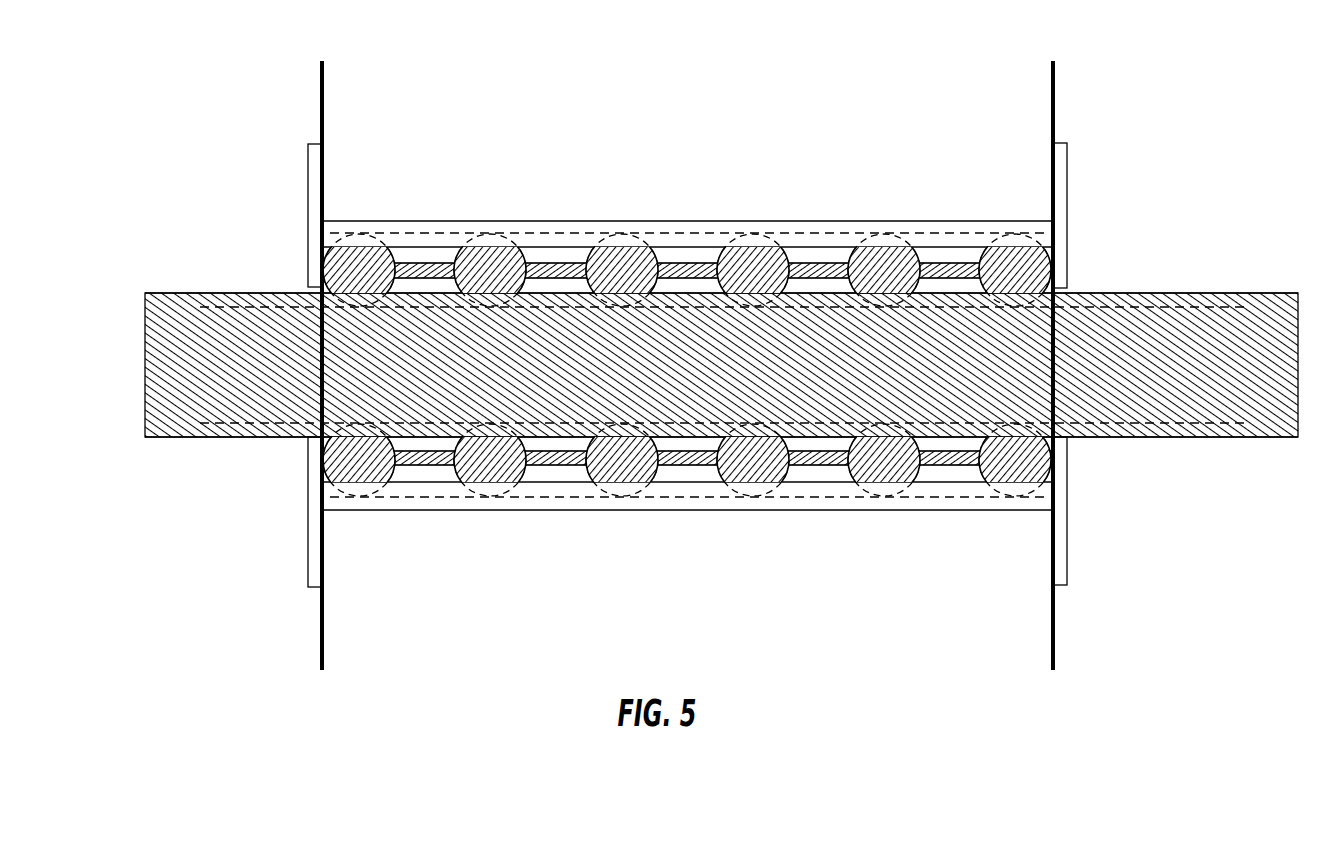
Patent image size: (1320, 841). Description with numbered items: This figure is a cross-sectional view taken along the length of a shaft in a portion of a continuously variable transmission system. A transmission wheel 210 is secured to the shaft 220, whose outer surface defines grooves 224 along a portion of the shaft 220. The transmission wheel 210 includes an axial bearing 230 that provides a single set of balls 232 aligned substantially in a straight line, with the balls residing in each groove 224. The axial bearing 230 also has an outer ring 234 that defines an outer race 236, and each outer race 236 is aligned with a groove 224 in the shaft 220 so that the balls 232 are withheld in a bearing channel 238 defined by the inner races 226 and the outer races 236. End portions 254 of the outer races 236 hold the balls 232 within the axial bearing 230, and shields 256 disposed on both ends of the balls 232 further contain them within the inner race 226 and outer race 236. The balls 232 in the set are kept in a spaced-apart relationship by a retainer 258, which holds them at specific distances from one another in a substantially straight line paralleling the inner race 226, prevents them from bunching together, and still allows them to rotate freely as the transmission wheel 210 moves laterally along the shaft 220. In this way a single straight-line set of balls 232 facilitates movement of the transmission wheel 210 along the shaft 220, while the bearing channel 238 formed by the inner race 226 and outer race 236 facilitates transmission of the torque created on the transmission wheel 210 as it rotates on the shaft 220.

The transmission wheel 210 is at (1053, 97).
The shaft 220 is at (1233, 322).
The grooves 224 is at (1130, 300).
The inner race 226 is at (688, 307).
The axial bearing 230 is at (910, 220).
The balls 232 is at (497, 253).
The outer ring 234 is at (708, 240).
The outer race 236 is at (476, 234).
The bearing channel 238 is at (810, 255).
The end portions 254 is at (330, 243).
The shields 256 is at (1062, 181).
The retainer 258 is at (406, 268).